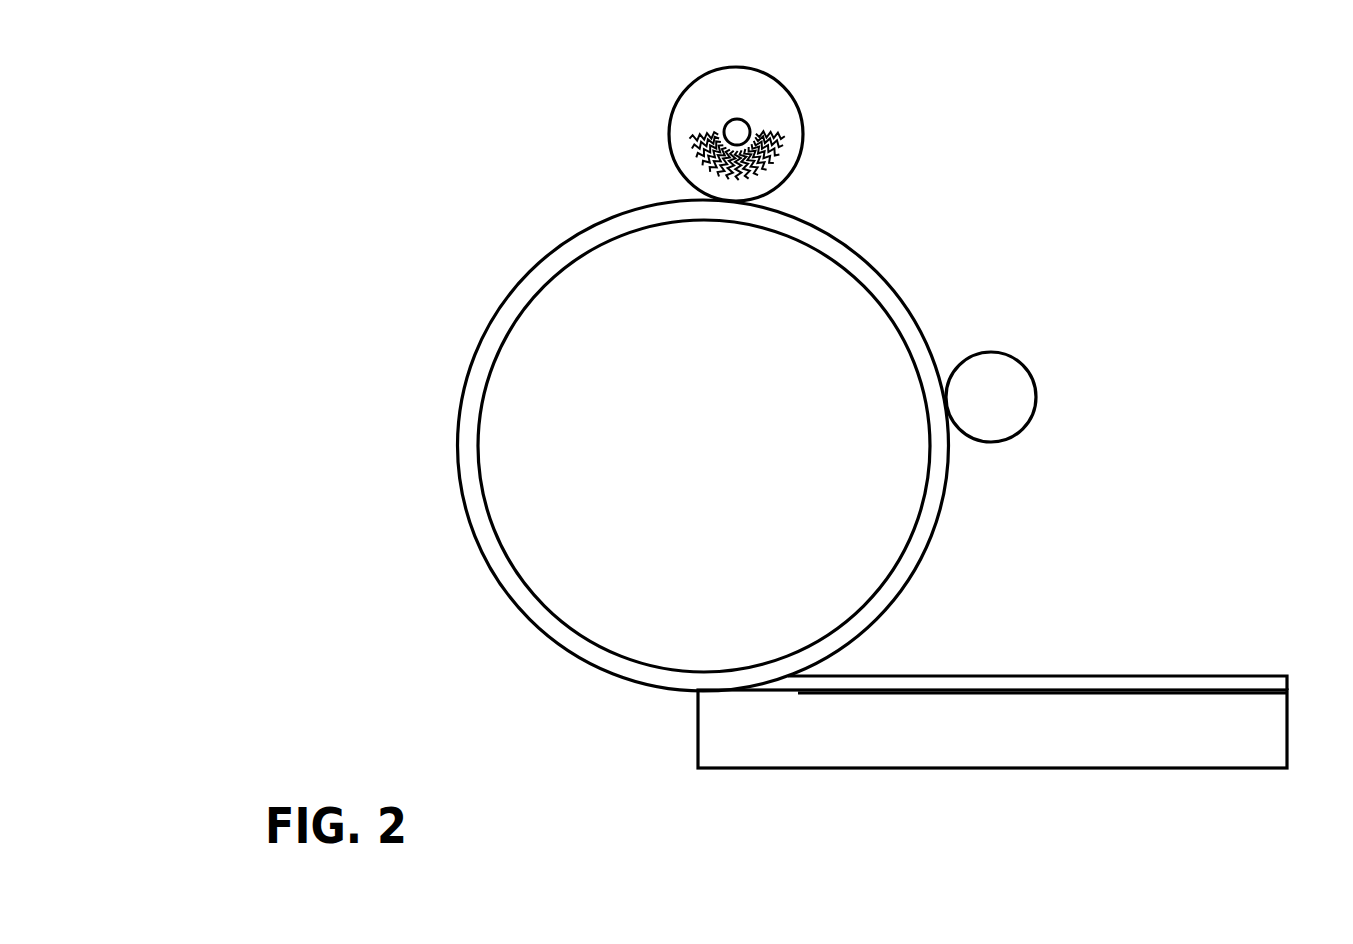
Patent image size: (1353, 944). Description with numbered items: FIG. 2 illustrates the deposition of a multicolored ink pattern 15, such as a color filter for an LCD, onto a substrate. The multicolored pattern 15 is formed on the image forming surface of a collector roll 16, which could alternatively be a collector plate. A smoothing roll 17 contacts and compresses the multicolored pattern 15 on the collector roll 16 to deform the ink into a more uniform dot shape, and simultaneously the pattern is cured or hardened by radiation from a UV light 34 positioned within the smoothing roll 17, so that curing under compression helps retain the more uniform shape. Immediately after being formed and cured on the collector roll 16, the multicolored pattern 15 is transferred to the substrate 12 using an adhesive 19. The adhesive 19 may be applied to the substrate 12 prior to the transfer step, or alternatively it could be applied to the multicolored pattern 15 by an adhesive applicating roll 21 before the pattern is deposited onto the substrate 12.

The substrate 12 is at (1197, 742).
The multicolored ink pattern 15 is at (545, 280).
The collector roll 16 is at (724, 452).
The smoothing roll 17 is at (783, 88).
The adhesive 19 is at (1257, 672).
The adhesive applicating roll 21 is at (991, 397).
The UV light 34 is at (740, 118).